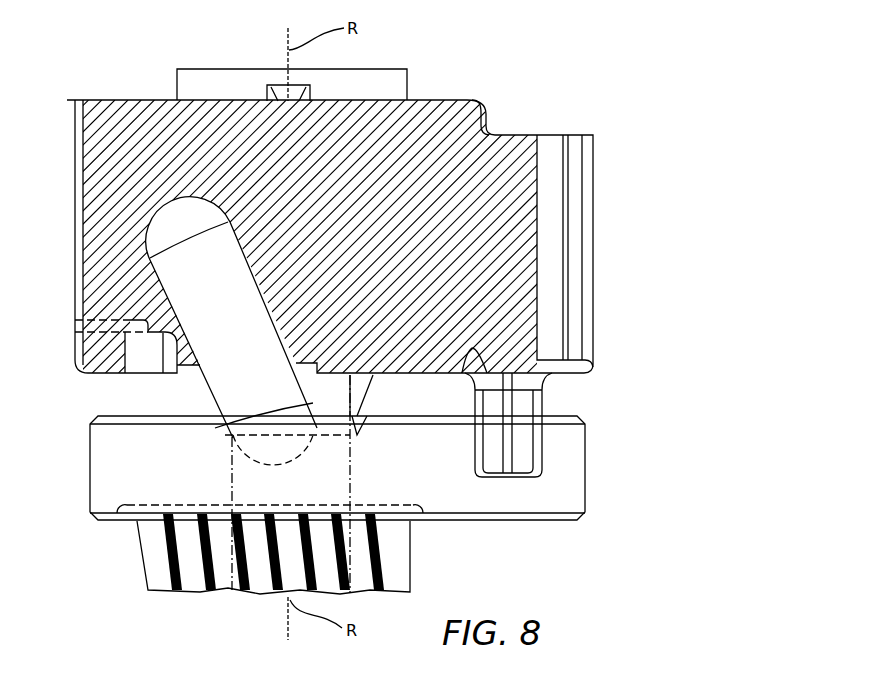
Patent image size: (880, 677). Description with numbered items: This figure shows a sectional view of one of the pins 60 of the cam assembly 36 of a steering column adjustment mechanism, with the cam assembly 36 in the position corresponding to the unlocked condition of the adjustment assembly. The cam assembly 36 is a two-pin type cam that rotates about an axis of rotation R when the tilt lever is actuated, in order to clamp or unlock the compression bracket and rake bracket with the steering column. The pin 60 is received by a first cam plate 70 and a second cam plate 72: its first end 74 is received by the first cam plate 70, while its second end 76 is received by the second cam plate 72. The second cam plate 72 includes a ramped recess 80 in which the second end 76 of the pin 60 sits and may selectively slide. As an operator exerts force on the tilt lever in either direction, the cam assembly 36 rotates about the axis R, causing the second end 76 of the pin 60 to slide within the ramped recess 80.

The cam assembly 36 is at (545, 108).
The pin 60 is at (244, 342).
The first cam plate 70 is at (438, 480).
The second cam plate 72 is at (406, 243).
The first end 74 is at (257, 445).
The second end 76 is at (168, 227).
The ramped recess 80 is at (143, 295).